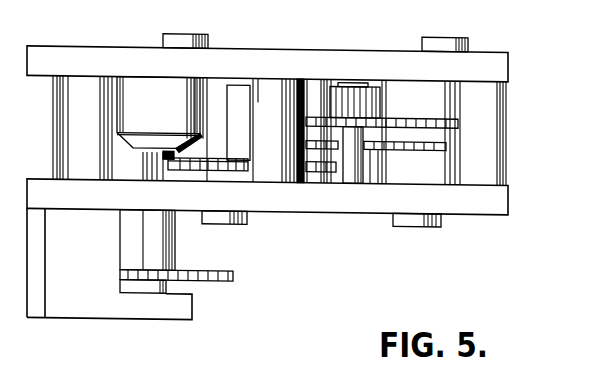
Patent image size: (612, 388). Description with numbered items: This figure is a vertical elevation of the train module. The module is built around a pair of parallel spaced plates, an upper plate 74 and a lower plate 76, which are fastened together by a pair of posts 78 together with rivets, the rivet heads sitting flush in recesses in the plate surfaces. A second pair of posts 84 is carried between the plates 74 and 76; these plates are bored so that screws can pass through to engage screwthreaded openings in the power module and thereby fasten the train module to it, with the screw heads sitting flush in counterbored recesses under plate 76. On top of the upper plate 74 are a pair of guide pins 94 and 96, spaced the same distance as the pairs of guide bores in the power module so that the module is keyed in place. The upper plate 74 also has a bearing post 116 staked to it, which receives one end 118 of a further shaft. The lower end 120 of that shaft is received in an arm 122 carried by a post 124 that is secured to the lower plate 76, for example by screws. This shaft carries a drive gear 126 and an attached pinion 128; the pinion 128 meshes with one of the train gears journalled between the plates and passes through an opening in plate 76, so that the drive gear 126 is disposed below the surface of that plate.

The upper plate 74 is at (117, 46).
The lower plate 76 is at (300, 210).
The posts 78 is at (285, 139).
The second pair of posts 84 is at (93, 145).
The guide pin 94 is at (189, 33).
The guide pin 96 is at (439, 36).
The bearing post 116 is at (170, 118).
The shaft end 118 is at (176, 155).
The lower shaft end 120 is at (167, 287).
The arm 122 is at (103, 306).
The post 124 is at (60, 273).
The drive gear 126 is at (220, 282).
The pinion 128 is at (174, 243).